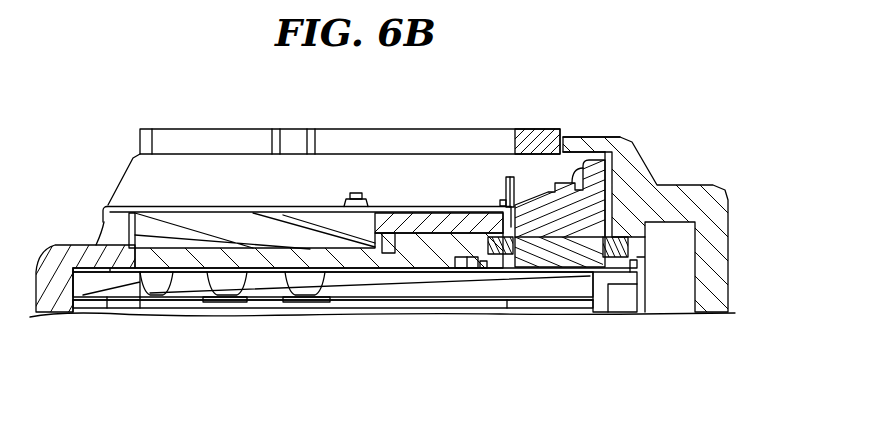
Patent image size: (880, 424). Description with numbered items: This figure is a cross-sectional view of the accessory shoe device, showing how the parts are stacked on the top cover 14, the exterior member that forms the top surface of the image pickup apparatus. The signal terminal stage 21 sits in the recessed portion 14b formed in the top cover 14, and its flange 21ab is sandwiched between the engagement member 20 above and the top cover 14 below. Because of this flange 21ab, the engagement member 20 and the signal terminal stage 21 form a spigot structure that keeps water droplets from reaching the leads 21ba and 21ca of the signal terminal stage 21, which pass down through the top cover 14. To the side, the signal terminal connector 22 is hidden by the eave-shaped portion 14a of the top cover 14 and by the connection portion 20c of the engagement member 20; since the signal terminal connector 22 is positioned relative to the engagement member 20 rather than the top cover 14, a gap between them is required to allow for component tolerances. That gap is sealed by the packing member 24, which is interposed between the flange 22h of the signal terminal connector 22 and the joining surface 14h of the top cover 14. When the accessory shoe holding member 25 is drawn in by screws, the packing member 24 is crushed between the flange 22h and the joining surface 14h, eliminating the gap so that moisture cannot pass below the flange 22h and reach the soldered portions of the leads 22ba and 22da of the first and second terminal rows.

The top cover 14 is at (72, 245).
The eave-shaped portion 14a is at (592, 150).
The recessed portion 14b is at (150, 260).
The joining surface 14h is at (492, 238).
The engagement member 20 is at (200, 128).
The connection portion 20c is at (533, 137).
The signal terminal stage 21 is at (240, 228).
The flange 21ab is at (378, 238).
The lead 21ca is at (227, 288).
The lead 21ba is at (302, 301).
The signal terminal connector 22 is at (588, 210).
The lead 22da is at (485, 262).
The flange 22h is at (497, 262).
The lead 22ba is at (632, 262).
The packing member 24 is at (617, 236).
The accessory shoe holding member 25 is at (364, 285).